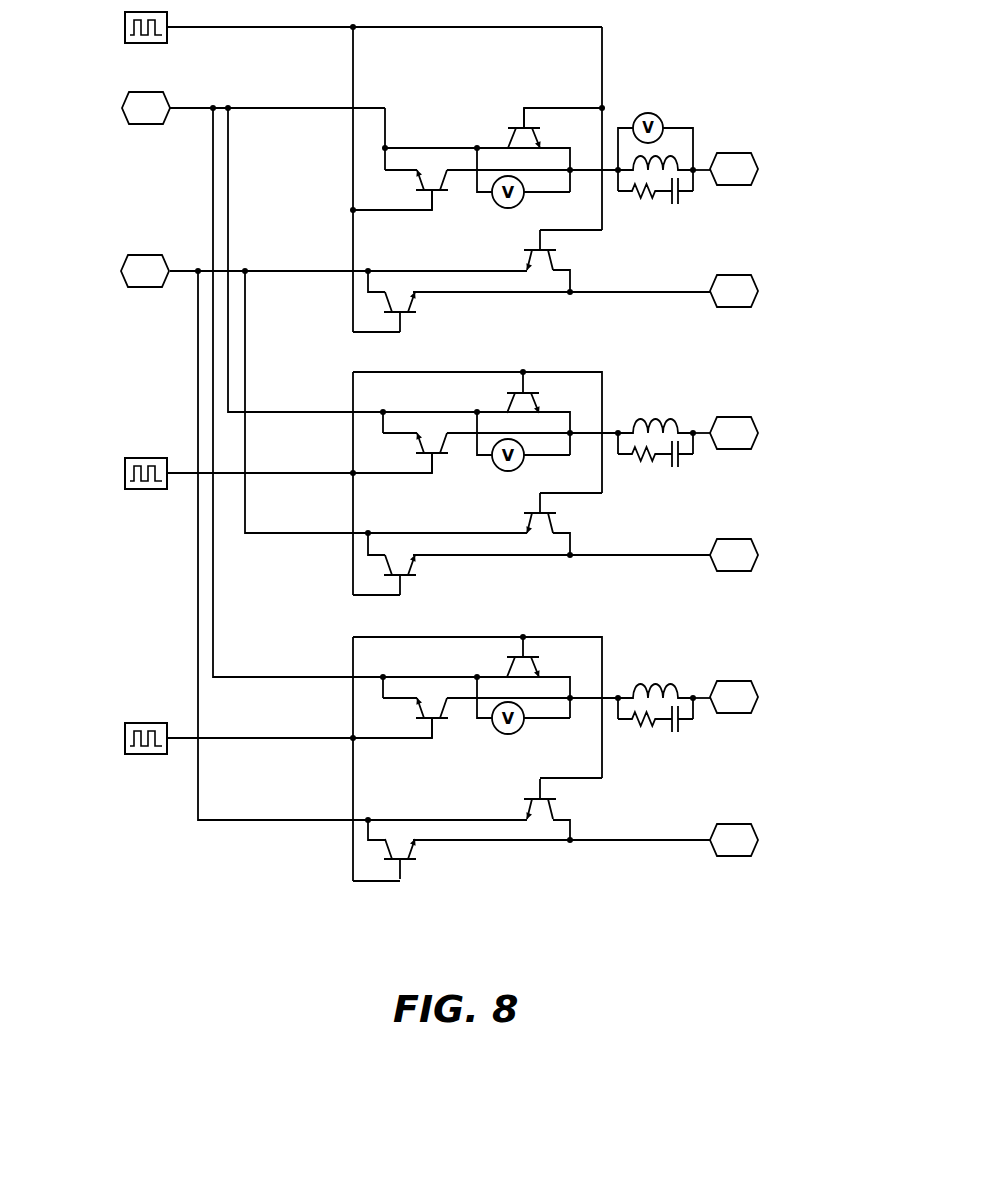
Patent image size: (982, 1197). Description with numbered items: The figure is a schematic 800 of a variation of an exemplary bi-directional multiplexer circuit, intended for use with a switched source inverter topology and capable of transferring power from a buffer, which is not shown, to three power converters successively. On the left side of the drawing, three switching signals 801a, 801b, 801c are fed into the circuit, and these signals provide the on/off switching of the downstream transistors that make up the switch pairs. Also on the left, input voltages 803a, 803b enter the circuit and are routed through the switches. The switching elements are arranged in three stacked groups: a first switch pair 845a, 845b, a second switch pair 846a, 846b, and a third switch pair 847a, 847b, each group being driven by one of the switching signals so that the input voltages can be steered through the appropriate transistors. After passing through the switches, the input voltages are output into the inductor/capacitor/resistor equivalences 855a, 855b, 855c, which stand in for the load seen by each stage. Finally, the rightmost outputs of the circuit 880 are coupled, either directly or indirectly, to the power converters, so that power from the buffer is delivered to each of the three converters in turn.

The schematic 800 is at (818, 23).
The switching signal 801a is at (124, 30).
The switching signal 801b is at (125, 487).
The switching signal 801c is at (153, 752).
The input voltage 803a is at (145, 125).
The input voltage 803b is at (145, 287).
The switch pair 845a is at (487, 112).
The switch pair 845b is at (494, 306).
The switch pair 846a is at (485, 392).
The switch pair 846b is at (492, 568).
The switch pair 847a is at (487, 657).
The switch pair 847b is at (494, 853).
The inductor/capacitor/resistor equivalence 855a is at (704, 114).
The inductor/capacitor/resistor equivalence 855b is at (662, 409).
The inductor/capacitor/resistor equivalence 855c is at (678, 674).
The rightmost outputs of the circuit 880 is at (755, 820).